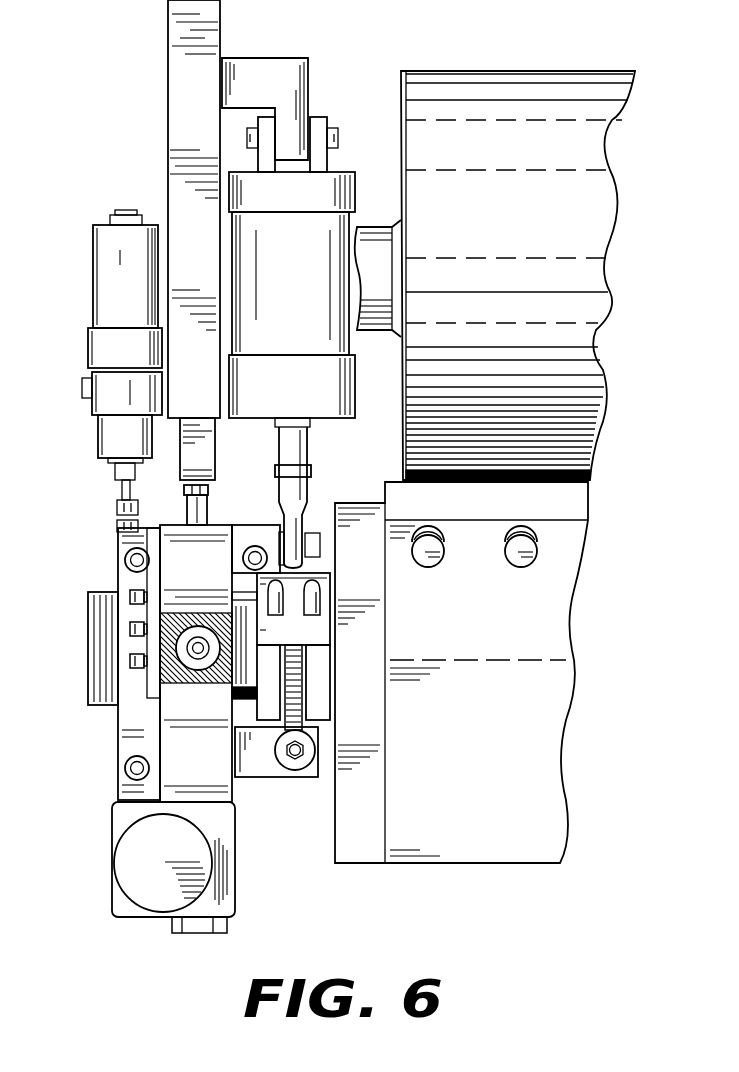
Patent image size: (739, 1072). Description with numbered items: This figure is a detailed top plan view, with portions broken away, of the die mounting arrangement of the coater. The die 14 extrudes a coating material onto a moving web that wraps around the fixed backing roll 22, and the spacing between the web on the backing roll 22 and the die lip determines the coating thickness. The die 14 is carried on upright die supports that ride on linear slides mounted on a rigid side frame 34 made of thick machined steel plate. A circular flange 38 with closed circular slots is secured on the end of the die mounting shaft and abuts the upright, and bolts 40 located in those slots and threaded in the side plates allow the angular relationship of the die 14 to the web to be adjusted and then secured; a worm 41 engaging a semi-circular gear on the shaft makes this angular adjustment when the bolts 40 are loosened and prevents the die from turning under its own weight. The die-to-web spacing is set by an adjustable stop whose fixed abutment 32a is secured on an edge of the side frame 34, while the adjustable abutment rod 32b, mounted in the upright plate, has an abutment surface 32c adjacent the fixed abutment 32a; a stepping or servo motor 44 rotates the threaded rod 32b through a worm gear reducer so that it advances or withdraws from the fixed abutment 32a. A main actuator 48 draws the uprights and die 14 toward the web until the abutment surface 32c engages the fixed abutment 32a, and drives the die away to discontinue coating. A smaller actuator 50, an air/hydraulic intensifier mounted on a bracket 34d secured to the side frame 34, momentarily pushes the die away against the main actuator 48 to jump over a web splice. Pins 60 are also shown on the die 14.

The die 14 is at (452, 868).
The backing roll 22 is at (520, 68).
The fixed abutment 32a is at (215, 452).
The adjustable abutment rod 32b is at (210, 505).
The abutment surface 32c is at (208, 489).
The side frame 34 is at (168, 42).
The bracket 34d is at (92, 400).
The circular flange 38 is at (147, 576).
The bolts 40 is at (130, 597).
The worm 41 is at (296, 764).
The motor 44 is at (114, 852).
The main actuator 48 is at (355, 193).
The smaller actuator 50 is at (93, 262).
The pins 60 is at (430, 567).